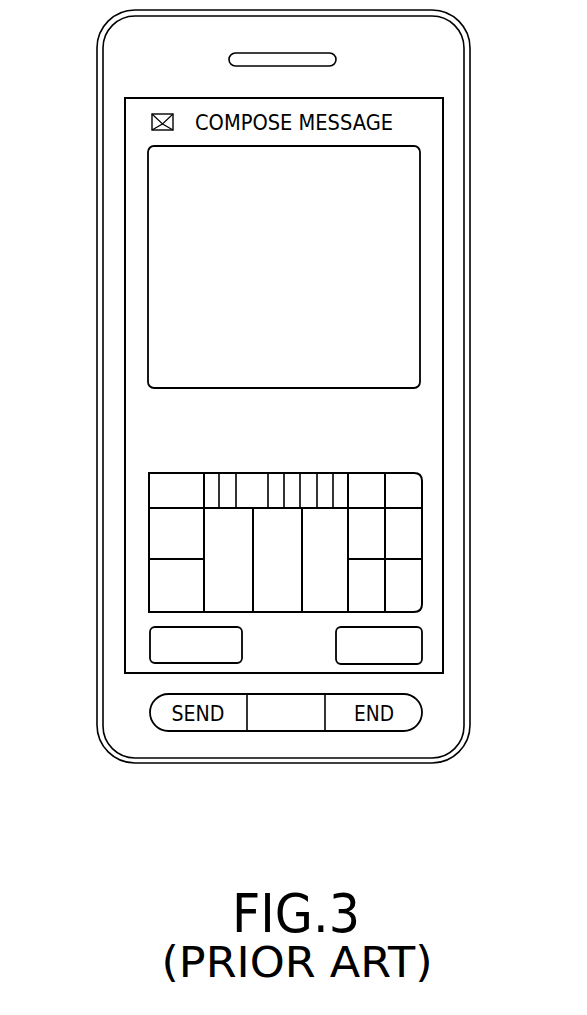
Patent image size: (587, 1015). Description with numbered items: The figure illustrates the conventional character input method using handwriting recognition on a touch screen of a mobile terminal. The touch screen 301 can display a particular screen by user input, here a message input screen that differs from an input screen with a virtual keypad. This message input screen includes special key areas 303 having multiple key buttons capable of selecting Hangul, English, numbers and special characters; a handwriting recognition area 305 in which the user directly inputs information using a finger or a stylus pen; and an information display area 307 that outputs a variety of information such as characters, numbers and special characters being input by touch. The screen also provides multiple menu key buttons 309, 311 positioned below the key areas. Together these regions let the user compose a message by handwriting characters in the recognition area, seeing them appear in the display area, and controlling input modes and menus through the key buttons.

The touch screen 301 is at (443, 162).
The special key areas 303 is at (285, 519).
The handwriting recognition area 305 is at (275, 467).
The information display area 307 is at (420, 240).
The menu key button 309 is at (422, 645).
The menu key button 311 is at (150, 645).